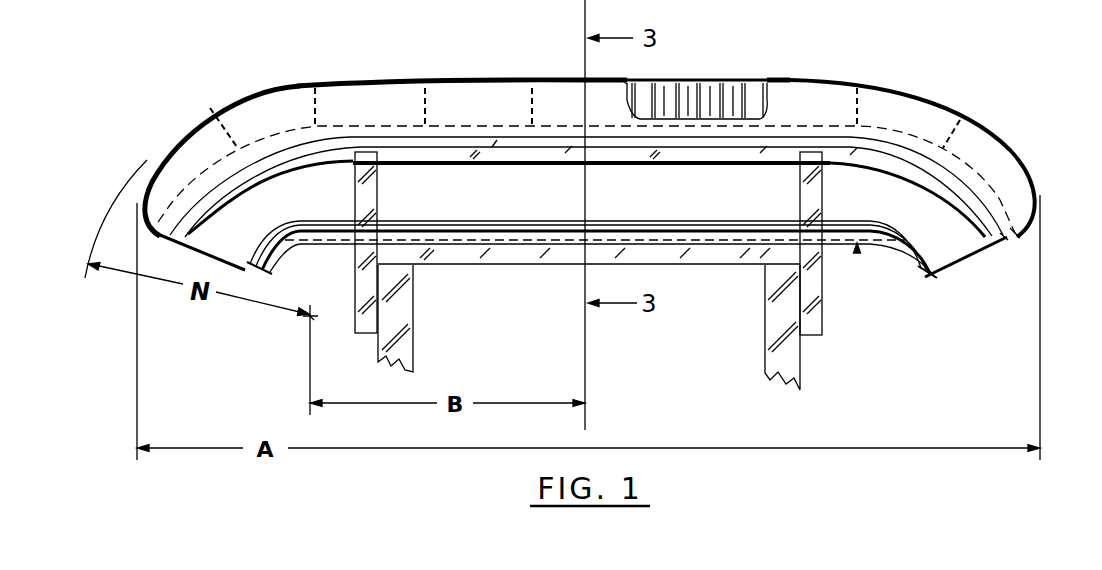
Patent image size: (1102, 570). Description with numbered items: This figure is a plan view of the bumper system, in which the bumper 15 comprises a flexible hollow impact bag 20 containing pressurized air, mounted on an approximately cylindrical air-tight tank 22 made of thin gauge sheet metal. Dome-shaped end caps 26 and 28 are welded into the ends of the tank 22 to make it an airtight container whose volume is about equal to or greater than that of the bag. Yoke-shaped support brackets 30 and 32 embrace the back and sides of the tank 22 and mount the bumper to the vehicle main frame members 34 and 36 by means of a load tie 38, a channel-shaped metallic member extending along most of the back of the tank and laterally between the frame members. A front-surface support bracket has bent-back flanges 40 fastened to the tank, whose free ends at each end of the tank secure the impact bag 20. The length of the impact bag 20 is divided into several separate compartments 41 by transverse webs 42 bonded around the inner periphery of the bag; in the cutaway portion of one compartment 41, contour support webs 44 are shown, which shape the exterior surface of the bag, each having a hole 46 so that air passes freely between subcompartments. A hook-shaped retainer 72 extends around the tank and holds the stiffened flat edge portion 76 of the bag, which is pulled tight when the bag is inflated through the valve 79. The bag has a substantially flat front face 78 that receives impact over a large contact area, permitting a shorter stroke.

The bumper 15 is at (298, 320).
The impact bag 20 is at (400, 77).
The air-tight tank 22 is at (220, 234).
The end cap 26 is at (227, 270).
The end cap 28 is at (947, 279).
The support bracket 30 is at (356, 199).
The support bracket 32 is at (822, 195).
The vehicle main frame member 34 is at (405, 297).
The vehicle main frame member 36 is at (778, 312).
The load tie 38 is at (541, 252).
The bent-back flange 40 is at (518, 150).
The compartment 41 is at (670, 80).
The transverse web 42 is at (232, 145).
The contour support web 44 is at (740, 83).
The hole 46 is at (720, 110).
The hook-shaped retainer 72 is at (1003, 239).
The flat edge portion 76 is at (1013, 236).
The flat front face 78 is at (620, 76).
The valve 79 is at (860, 252).